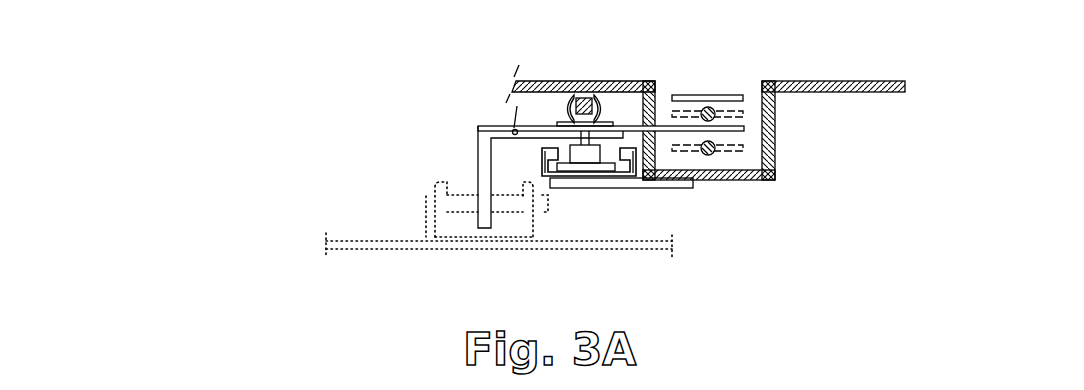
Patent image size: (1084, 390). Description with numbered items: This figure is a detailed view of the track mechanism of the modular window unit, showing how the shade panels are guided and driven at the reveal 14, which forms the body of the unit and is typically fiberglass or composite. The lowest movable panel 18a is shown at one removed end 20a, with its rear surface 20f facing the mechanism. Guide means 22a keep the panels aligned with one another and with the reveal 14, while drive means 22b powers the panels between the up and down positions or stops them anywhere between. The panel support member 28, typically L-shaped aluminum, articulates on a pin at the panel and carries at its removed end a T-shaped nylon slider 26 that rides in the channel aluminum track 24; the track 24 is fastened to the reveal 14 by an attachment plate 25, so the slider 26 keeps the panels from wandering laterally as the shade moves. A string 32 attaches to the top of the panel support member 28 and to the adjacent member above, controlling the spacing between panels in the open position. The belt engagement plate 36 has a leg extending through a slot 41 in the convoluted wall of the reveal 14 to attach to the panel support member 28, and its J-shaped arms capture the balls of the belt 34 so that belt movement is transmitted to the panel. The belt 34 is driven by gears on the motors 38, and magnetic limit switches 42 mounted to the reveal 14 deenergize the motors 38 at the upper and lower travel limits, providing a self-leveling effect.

The reveal 14 is at (832, 82).
The movable panel 18a is at (503, 250).
The removed end 20a is at (590, 254).
The rear surface 20f is at (375, 237).
The guide means 22a is at (458, 112).
The drive means 22b is at (658, 56).
The track 24 is at (542, 172).
The attachment plate 25 is at (613, 188).
The nylon slider 26 is at (582, 167).
The panel support member 28 is at (478, 162).
The string 32 is at (514, 122).
The belt 34 is at (790, 133).
The belt engagement plate 36 is at (738, 93).
The motors 38 is at (426, 231).
The slot 41 is at (658, 120).
The magnetic limit switches 42 is at (582, 82).